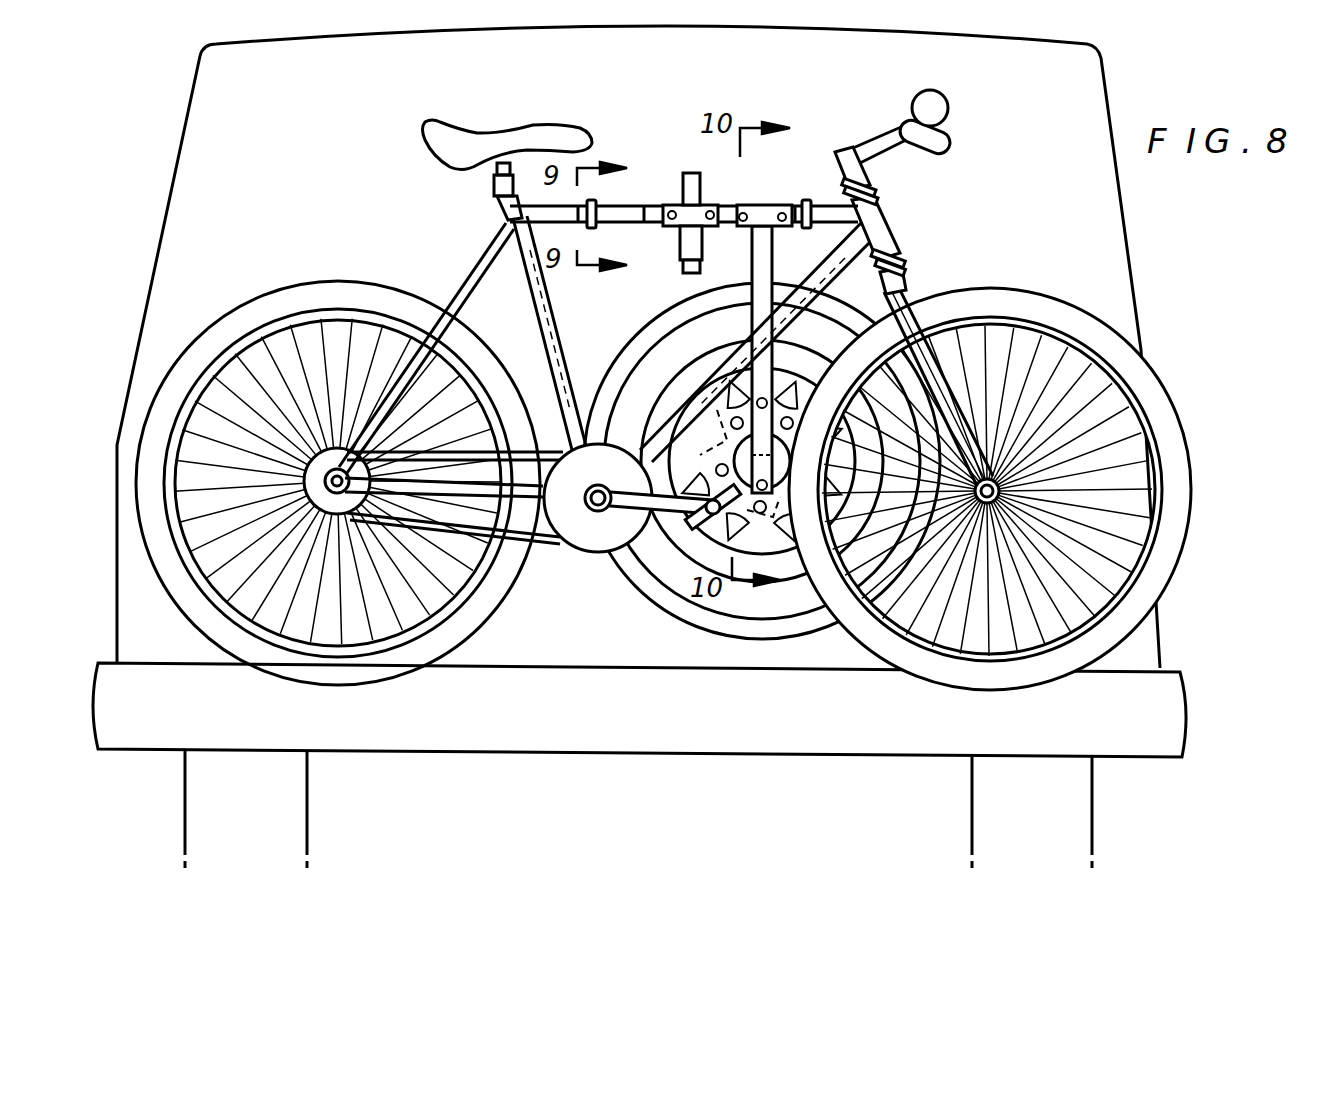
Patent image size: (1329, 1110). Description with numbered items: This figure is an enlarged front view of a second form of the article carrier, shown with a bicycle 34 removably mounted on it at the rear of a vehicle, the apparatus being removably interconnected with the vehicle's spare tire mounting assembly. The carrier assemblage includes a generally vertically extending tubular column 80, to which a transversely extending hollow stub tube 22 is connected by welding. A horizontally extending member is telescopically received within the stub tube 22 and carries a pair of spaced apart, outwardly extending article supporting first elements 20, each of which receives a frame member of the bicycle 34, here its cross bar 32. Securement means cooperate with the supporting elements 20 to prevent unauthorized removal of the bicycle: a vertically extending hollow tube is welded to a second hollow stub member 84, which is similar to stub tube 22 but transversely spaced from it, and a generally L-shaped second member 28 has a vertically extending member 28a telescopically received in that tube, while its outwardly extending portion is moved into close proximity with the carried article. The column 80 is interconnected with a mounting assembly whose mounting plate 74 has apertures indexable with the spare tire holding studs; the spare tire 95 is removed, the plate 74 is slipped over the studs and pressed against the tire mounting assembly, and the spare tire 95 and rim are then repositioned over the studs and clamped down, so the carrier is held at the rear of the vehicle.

The article supporting first elements 20 is at (592, 224).
The hollow stub tube 22 is at (768, 205).
The second member 28 is at (692, 173).
The vertically extending member 28a is at (683, 270).
The cross bar 32 is at (624, 205).
The bicycle 34 is at (897, 225).
The mounting plate 74 is at (712, 451).
The tubular column 80 is at (752, 320).
The second hollow stub member 84 is at (709, 205).
The spare tire 95 is at (630, 338).